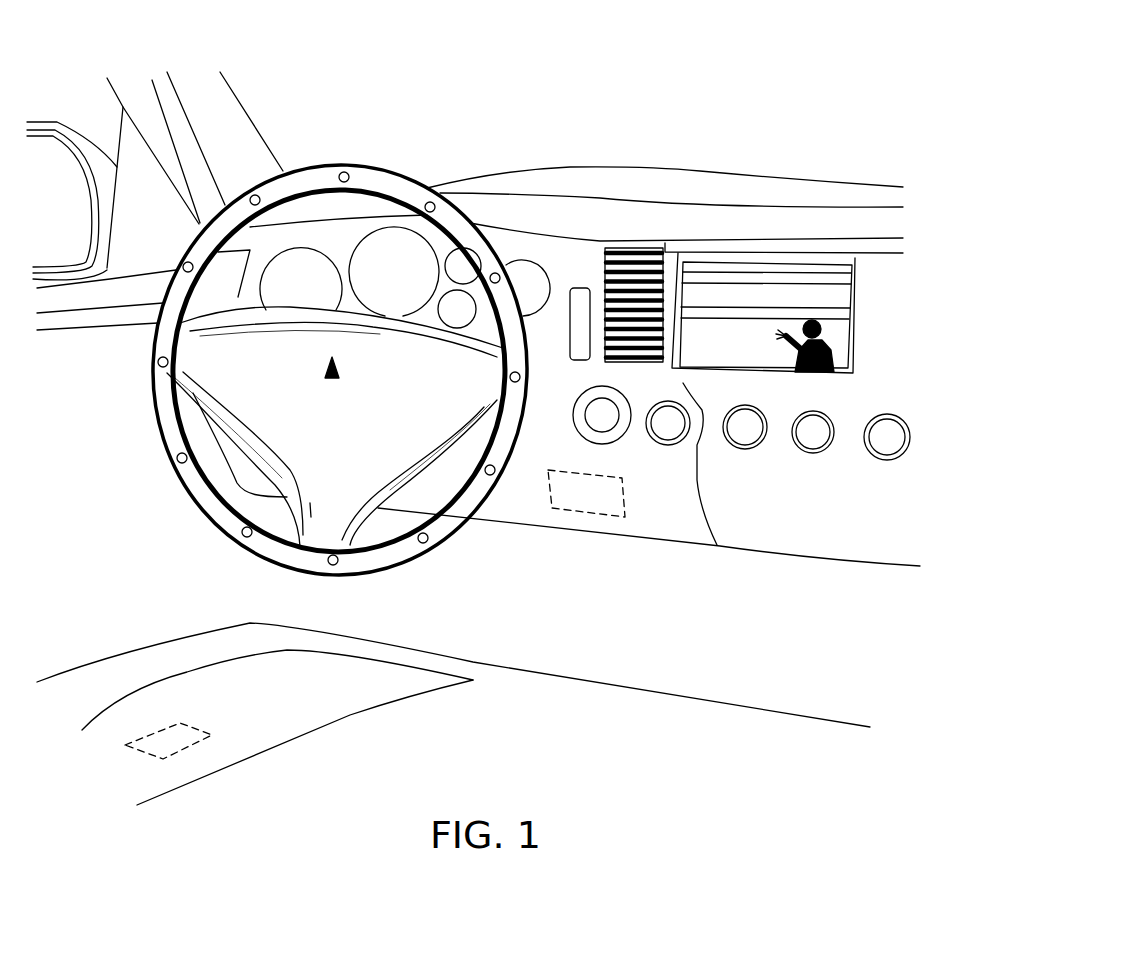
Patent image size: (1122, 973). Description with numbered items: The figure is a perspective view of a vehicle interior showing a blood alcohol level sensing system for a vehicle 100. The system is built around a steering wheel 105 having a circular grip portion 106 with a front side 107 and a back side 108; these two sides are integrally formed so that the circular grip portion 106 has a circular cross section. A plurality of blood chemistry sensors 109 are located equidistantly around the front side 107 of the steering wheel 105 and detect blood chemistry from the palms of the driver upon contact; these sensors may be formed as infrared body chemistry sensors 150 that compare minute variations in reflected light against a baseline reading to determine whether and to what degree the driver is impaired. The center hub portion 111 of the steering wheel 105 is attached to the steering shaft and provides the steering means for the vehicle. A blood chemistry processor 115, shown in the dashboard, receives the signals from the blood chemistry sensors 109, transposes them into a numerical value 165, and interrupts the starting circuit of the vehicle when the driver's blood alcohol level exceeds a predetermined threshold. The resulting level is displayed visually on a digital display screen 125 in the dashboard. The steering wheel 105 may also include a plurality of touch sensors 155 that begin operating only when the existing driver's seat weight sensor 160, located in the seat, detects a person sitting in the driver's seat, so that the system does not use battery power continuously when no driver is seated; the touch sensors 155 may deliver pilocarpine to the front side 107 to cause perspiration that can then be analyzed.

The blood alcohol level sensing system for a vehicle 100 is at (556, 71).
The steering wheel 105 is at (378, 167).
The circular grip portion 106 is at (465, 217).
The front side 107 is at (208, 497).
The back side 108 is at (223, 510).
The blood chemistry sensors 109 is at (340, 172).
The center hub portion 111 is at (333, 378).
The blood chemistry processor 115 is at (603, 513).
The digital display screen 125 is at (712, 262).
The infrared body chemistry sensors 150 is at (170, 450).
The touch sensors 155 is at (460, 237).
The driver's seat weight sensor 160 is at (209, 736).
The numerical value 165 is at (769, 283).